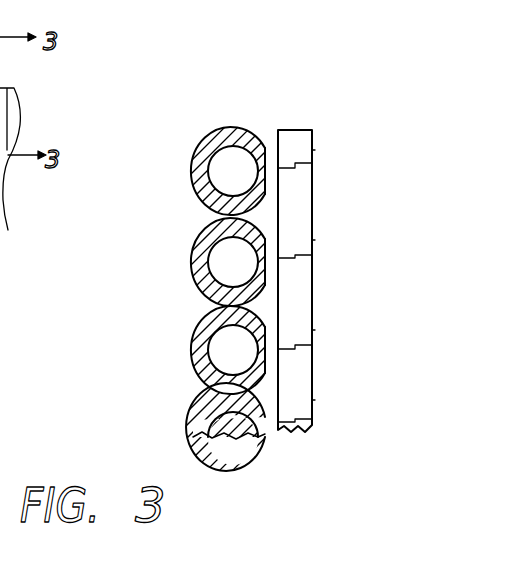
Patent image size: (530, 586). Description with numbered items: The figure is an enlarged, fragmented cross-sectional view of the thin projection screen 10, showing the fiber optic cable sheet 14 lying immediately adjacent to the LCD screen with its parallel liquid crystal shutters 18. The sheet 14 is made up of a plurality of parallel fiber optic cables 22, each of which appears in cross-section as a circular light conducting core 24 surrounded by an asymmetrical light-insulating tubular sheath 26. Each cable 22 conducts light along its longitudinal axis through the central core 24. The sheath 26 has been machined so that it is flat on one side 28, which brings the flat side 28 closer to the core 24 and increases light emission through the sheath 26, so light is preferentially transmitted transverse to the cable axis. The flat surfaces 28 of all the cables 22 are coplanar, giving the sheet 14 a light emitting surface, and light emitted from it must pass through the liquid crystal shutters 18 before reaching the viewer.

The projection screen 10 is at (345, 95).
The fiber optic cable sheet 14 is at (163, 345).
The liquid crystal shutters 18 is at (313, 179).
The fiber optic cable 22 is at (227, 130).
The light conducting core 24 is at (206, 144).
The light-insulating tubular sheath 26 is at (232, 173).
The flat side 28 is at (266, 150).